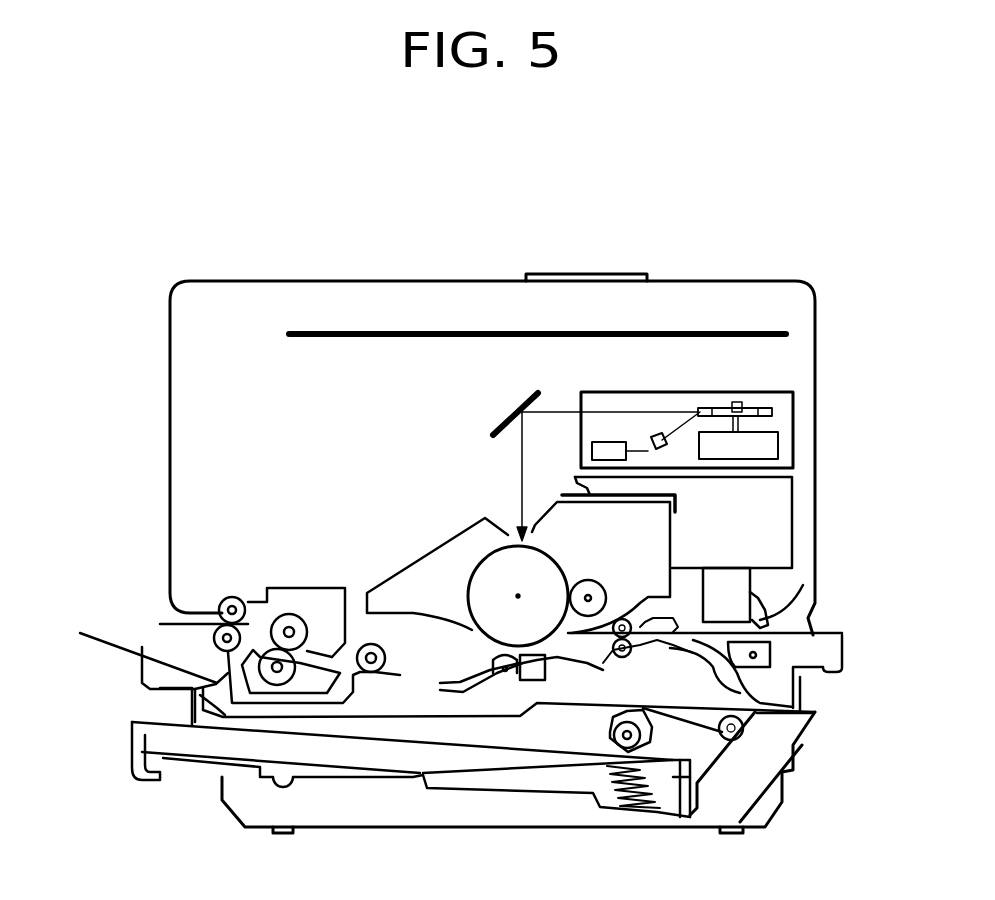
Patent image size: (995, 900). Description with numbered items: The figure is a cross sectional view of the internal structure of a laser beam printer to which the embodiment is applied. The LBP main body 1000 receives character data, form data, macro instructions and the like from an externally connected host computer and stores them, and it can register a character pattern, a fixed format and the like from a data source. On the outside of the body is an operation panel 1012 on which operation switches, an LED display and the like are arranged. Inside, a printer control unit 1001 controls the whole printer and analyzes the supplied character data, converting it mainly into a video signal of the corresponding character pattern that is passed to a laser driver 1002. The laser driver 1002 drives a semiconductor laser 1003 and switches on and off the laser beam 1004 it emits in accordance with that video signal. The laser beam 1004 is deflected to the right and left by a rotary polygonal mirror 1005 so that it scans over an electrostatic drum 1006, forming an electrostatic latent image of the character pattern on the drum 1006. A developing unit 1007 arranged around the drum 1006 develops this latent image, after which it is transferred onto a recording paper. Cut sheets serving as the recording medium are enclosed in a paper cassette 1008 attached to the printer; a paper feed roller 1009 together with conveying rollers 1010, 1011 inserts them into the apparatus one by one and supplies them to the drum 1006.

The LBP main body 1000 is at (750, 281).
The printer control unit 1001 is at (786, 331).
The laser driver 1002 is at (592, 452).
The semiconductor laser 1003 is at (660, 449).
The laser beam 1004 is at (662, 415).
The rotary polygonal mirror 1005 is at (793, 412).
The electrostatic drum 1006 is at (487, 565).
The developing unit 1007 is at (385, 590).
The paper cassette 1008 is at (132, 748).
The paper feed roller 1009 is at (607, 735).
The conveying roller 1010 is at (727, 740).
The conveying roller 1011 is at (627, 660).
The operation panel 1012 is at (615, 274).